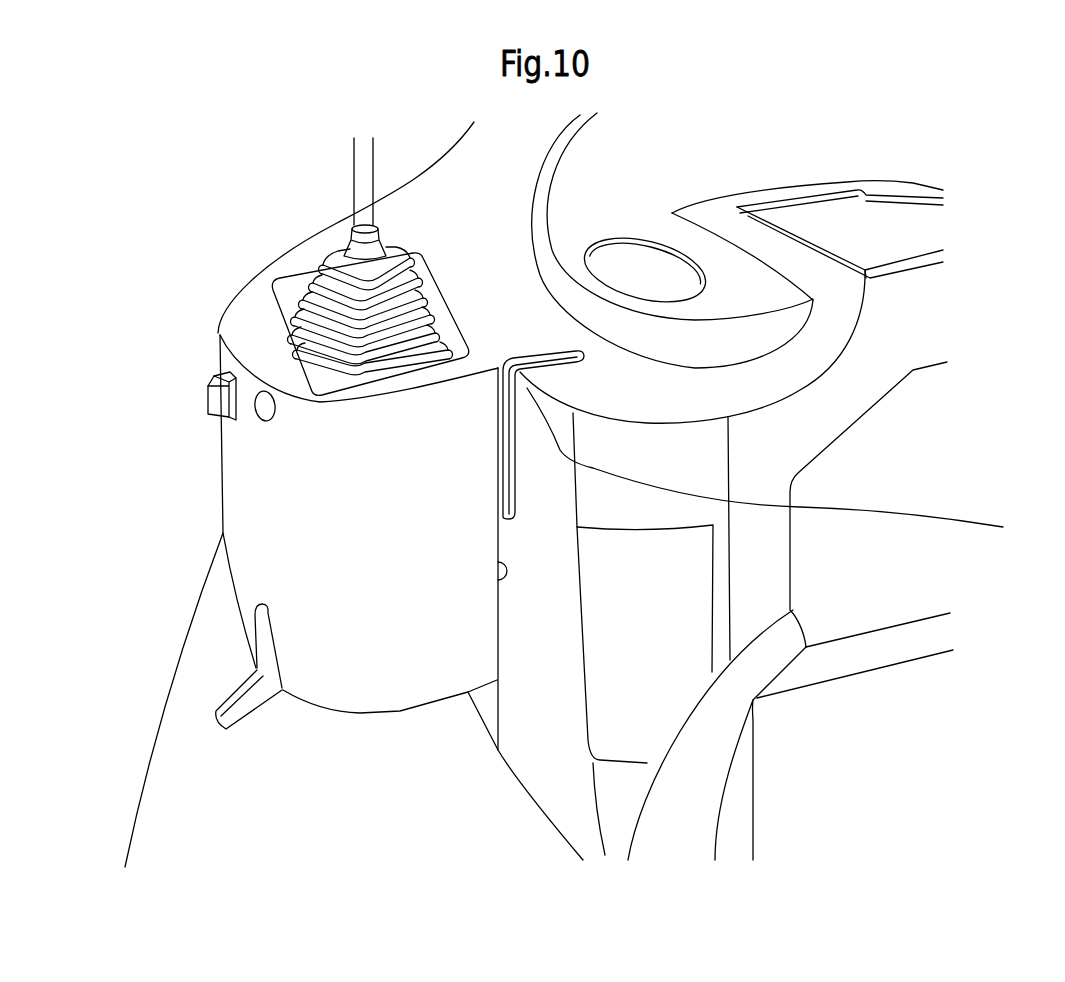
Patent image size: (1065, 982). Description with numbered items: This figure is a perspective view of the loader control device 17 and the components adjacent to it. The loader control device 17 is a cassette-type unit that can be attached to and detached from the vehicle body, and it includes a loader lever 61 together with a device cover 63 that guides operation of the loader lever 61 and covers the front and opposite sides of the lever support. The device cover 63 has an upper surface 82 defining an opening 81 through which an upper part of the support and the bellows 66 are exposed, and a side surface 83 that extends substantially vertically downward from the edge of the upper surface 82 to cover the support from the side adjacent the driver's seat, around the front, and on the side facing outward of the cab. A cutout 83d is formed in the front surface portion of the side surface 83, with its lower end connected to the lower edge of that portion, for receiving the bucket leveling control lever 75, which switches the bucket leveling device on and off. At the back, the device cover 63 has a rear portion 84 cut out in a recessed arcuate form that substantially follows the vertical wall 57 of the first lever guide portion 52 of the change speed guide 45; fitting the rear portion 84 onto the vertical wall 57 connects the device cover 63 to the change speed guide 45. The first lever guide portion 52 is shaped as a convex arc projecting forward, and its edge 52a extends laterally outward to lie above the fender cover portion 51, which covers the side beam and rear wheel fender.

The loader control device 17 is at (168, 205).
The change speed guide 45 is at (913, 313).
The fender cover portion 51 is at (170, 778).
The first lever guide portion 52 is at (618, 232).
The edge 52a is at (793, 467).
The vertical wall 57 is at (817, 433).
The loader lever 61 is at (353, 161).
The device cover 63 is at (186, 509).
The bellows 66 is at (298, 310).
The bucket leveling control lever 75 is at (233, 708).
The opening 81 is at (435, 313).
The upper surface 82 is at (270, 273).
The side surface 83 is at (237, 462).
The cutout 83d is at (268, 608).
The rear portion 84 is at (497, 590).